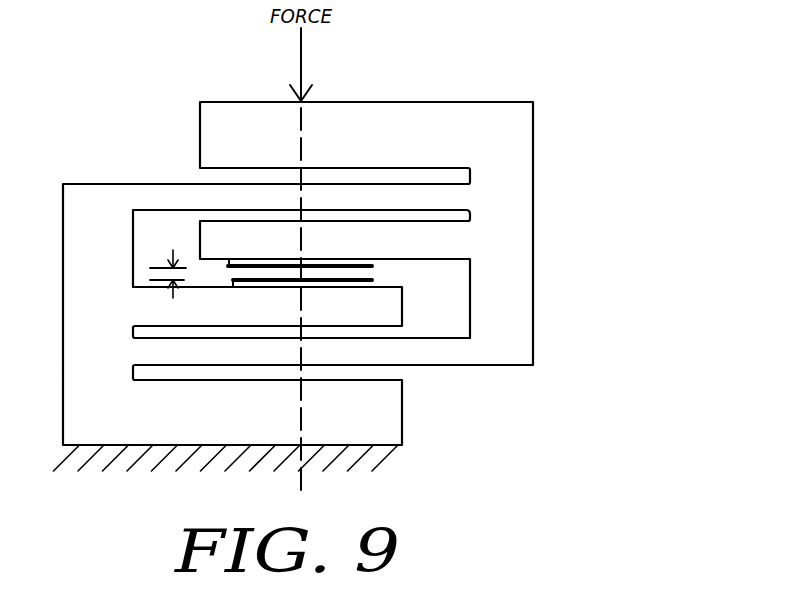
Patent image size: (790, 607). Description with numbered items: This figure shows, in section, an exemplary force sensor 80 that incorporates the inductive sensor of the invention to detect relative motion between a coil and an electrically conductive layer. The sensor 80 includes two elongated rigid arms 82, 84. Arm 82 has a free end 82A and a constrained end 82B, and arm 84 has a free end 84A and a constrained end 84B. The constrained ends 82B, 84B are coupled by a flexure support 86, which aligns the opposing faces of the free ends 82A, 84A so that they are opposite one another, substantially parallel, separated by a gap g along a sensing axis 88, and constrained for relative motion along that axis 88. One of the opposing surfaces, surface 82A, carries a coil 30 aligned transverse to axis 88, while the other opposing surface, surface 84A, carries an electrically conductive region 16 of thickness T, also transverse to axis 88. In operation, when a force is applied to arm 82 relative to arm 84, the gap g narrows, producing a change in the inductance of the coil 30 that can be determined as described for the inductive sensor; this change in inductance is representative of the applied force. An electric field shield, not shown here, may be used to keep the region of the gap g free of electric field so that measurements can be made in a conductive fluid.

The force sensor 80 is at (534, 43).
The arm 82 is at (263, 243).
The free end 82A is at (246, 252).
The constrained end 82B is at (477, 248).
The arm 84 is at (242, 314).
The free end 84A is at (392, 313).
The constrained end 84B is at (162, 317).
The flexure support 86 is at (533, 184).
The sensing axis 88 is at (303, 485).
The coil 30 is at (372, 264).
The electrically conductive region 16 is at (372, 280).
The gap g is at (172, 252).